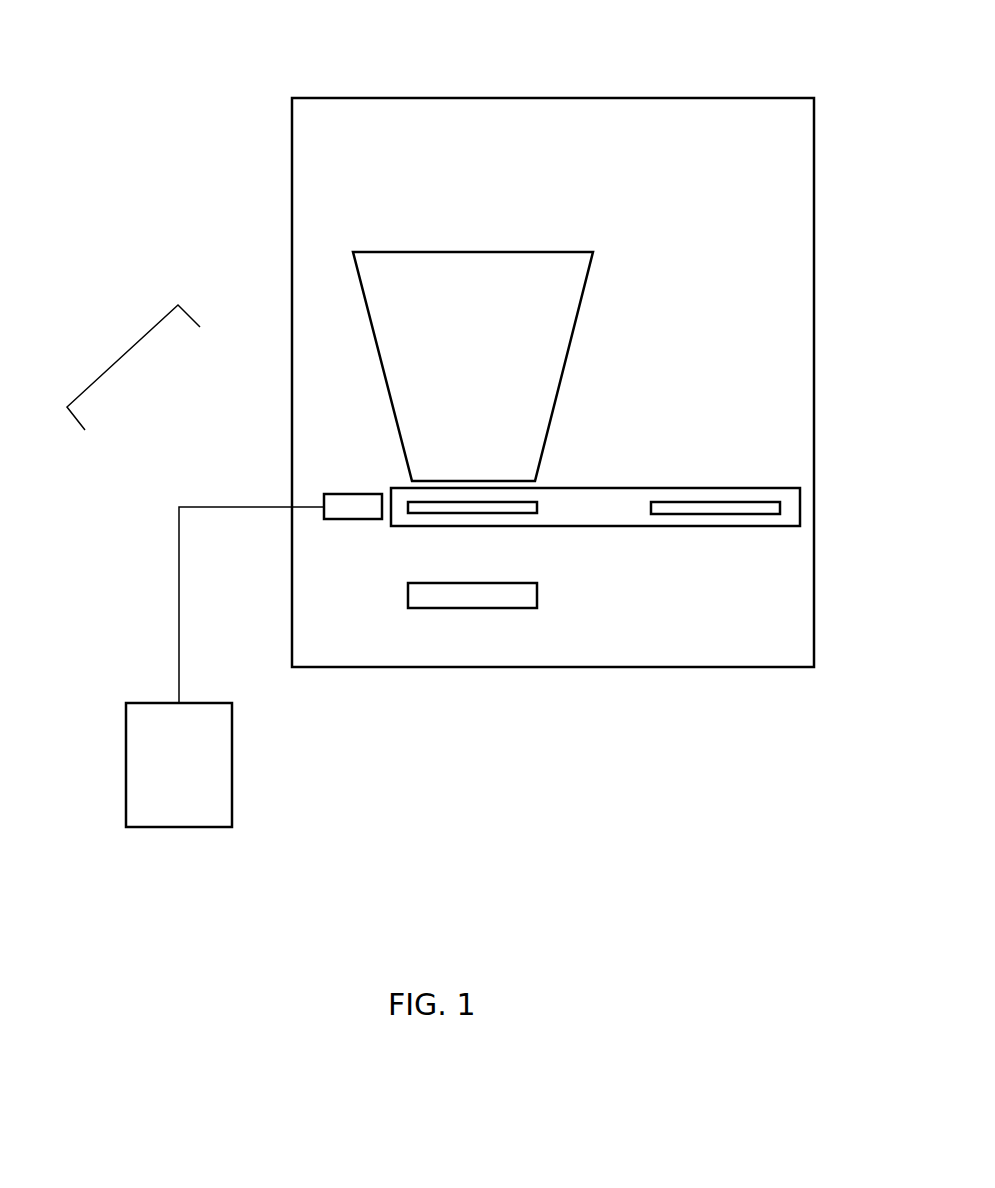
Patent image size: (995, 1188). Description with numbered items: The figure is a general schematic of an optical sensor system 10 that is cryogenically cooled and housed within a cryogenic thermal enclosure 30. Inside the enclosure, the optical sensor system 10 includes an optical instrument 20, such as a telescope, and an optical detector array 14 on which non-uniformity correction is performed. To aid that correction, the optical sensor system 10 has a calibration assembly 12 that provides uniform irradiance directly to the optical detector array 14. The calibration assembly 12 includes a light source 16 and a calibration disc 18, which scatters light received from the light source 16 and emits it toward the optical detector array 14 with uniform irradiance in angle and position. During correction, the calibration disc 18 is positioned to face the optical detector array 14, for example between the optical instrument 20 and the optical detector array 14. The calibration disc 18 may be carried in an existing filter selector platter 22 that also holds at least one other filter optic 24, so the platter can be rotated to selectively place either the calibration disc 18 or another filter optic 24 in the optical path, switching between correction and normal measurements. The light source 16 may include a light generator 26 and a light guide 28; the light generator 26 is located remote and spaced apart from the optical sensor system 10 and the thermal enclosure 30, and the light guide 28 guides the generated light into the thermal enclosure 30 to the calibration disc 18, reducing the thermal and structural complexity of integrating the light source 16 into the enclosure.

The optical sensor system 10 is at (240, 159).
The calibration assembly 12 is at (122, 353).
The optical detector array 14 is at (503, 595).
The light source 16 is at (134, 484).
The calibration disc 18 is at (418, 506).
The optical instrument 20 is at (473, 279).
The filter selector platter 22 is at (608, 513).
The filter optic 24 is at (717, 502).
The light generator 26 is at (142, 717).
The light guide 28 is at (203, 510).
The cryogenic thermal enclosure 30 is at (643, 97).